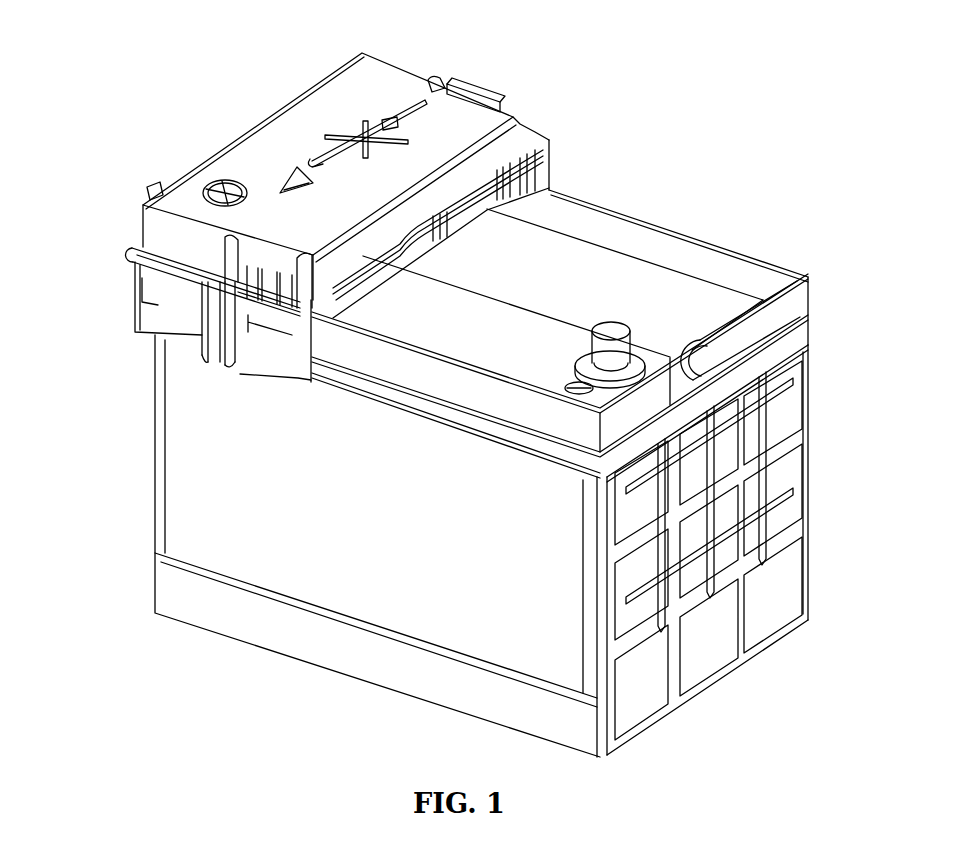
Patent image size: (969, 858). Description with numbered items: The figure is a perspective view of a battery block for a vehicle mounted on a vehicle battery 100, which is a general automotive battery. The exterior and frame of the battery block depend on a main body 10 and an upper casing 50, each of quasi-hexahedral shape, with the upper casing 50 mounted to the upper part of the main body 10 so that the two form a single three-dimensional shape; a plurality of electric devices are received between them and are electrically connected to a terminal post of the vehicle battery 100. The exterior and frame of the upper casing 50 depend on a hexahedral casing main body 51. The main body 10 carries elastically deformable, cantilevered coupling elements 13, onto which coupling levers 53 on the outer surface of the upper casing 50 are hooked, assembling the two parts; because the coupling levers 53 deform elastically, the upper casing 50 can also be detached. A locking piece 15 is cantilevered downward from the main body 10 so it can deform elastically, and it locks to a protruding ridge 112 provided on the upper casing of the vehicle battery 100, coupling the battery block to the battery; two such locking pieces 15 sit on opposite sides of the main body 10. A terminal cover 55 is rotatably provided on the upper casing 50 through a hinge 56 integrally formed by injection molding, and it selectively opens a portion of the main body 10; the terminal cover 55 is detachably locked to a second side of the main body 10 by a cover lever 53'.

The vehicle battery 100 is at (465, 473).
The protruding ridge 112 is at (778, 373).
The main body 10 is at (134, 307).
The coupling element 13 is at (170, 277).
The locking piece 15 is at (203, 343).
The upper casing 50 is at (294, 214).
The casing main body 51 is at (333, 102).
The coupling lever 53 is at (337, 145).
The cover lever 53' is at (118, 200).
The terminal cover 55 is at (205, 176).
The hinge 56 is at (263, 210).